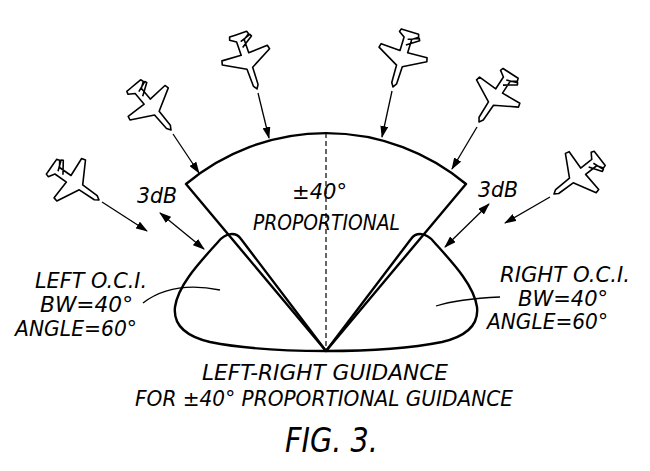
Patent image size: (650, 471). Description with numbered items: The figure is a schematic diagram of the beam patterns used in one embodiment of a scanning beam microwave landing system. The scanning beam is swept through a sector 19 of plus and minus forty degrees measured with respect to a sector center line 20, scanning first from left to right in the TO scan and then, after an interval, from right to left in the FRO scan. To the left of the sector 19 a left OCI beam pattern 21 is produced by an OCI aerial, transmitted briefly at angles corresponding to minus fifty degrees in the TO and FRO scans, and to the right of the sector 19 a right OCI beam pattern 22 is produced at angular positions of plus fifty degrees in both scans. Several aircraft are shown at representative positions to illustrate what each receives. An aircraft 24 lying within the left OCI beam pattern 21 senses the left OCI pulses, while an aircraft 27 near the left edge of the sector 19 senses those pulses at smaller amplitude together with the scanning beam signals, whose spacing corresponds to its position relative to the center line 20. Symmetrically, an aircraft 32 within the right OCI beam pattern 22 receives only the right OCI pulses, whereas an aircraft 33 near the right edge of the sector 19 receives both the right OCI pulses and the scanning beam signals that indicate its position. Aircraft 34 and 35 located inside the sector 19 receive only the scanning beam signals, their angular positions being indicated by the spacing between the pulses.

The sector 19 is at (326, 132).
The sector center line 20 is at (329, 157).
The OCI beam pattern 21 is at (187, 335).
The OCI beam pattern 22 is at (465, 332).
The aircraft 24 is at (93, 173).
The aircraft 27 is at (168, 101).
The aircraft 34 is at (250, 46).
The aircraft 35 is at (397, 43).
The aircraft 33 is at (513, 84).
The aircraft 32 is at (568, 157).